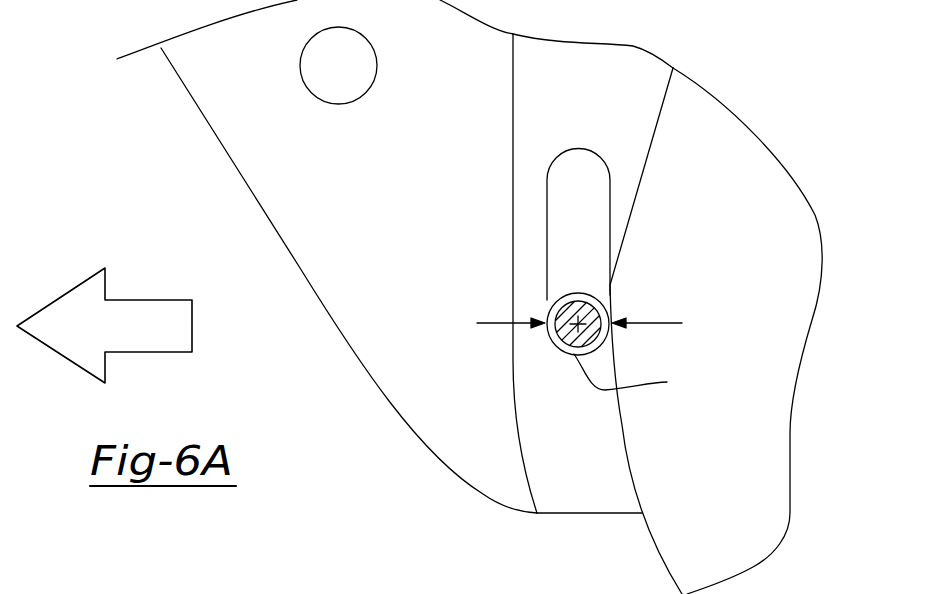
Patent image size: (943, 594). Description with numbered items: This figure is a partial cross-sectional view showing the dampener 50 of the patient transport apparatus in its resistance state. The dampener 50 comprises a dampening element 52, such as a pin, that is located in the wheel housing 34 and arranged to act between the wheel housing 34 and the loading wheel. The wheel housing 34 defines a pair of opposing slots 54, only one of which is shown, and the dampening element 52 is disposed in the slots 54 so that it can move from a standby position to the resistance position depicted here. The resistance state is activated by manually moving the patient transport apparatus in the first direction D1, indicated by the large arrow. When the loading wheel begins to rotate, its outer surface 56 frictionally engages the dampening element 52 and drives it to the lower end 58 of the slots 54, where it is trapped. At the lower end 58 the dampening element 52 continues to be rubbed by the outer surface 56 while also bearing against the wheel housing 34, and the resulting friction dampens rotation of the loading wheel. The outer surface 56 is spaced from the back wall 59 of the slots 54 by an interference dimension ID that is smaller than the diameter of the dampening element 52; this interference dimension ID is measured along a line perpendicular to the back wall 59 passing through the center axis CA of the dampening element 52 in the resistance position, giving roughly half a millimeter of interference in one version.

The wheel housing 34 is at (478, 232).
The dampener 50 is at (561, 372).
The dampening element 52 is at (554, 342).
The slots 54 is at (546, 180).
The outer surface 56 is at (647, 548).
The lower end 58 is at (635, 375).
The back wall 59 is at (547, 213).
The interference dimension ID is at (495, 322).
The center axis CA is at (595, 305).
The first direction D1 is at (147, 300).